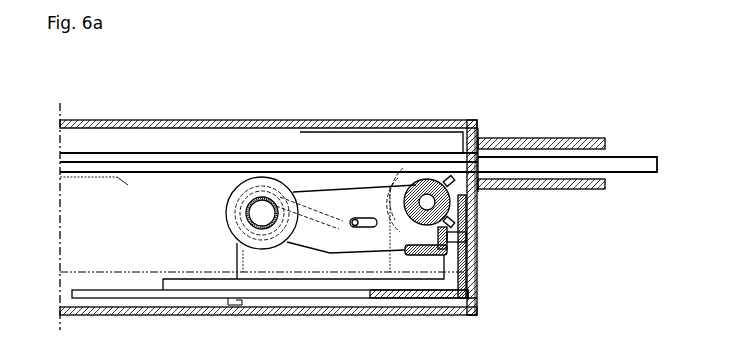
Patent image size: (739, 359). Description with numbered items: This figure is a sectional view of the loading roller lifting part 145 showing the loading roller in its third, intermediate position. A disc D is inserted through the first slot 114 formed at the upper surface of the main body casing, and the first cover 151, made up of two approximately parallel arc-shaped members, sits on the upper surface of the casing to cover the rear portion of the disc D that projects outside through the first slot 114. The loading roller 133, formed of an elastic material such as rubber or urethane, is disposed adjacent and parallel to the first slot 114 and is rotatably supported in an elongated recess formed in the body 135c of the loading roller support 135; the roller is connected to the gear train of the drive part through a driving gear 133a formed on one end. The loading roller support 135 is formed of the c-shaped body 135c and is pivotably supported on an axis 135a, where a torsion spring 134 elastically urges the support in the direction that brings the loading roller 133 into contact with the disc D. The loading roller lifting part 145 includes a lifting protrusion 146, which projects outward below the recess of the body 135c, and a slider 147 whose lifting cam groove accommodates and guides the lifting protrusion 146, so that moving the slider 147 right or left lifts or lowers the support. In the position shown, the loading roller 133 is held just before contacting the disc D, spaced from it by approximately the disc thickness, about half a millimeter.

The axis 135a is at (255, 205).
The torsion spring 134 is at (311, 193).
The loading roller support 135 is at (343, 217).
The driving gear 133a is at (420, 182).
The loading roller 133 is at (437, 186).
The first slot 114 is at (480, 150).
The disc D is at (538, 157).
The first cover 151 is at (566, 140).
The lifting protrusion 146 is at (470, 236).
The loading roller lifting part 145 is at (503, 257).
The slider 147 is at (478, 289).
The body 135c is at (420, 258).